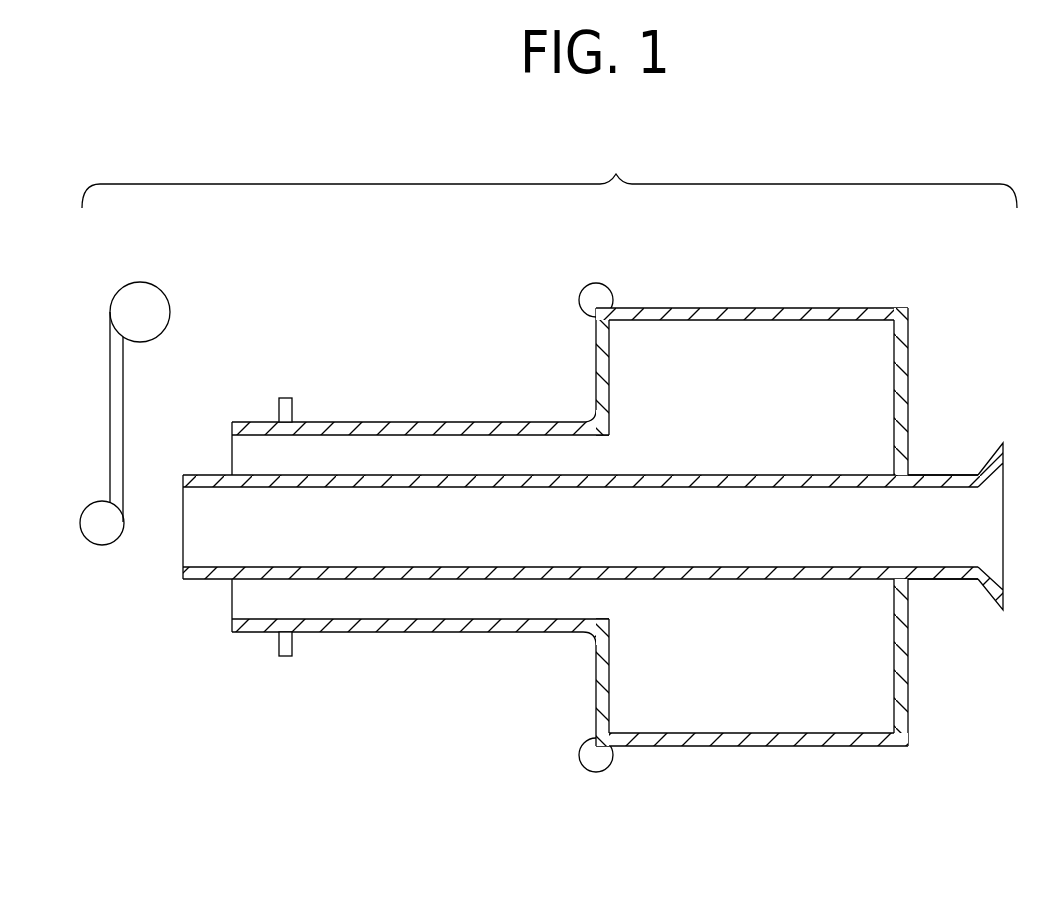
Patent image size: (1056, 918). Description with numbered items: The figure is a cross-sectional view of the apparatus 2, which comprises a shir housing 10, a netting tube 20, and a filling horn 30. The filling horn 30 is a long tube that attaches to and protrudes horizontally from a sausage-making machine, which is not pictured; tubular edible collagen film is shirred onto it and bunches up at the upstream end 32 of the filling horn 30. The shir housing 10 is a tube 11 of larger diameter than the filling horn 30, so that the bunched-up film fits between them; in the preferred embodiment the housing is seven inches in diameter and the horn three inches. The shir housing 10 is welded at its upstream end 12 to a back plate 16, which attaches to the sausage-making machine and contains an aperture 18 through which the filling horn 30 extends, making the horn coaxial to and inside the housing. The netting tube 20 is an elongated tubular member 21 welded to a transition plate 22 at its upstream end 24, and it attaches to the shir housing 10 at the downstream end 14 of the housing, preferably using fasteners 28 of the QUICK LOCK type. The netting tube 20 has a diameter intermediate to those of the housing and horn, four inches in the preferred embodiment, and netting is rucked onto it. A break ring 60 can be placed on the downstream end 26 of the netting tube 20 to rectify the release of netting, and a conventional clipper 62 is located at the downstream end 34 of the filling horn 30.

The apparatus 2 is at (463, 334).
The shir housing 10 is at (810, 308).
The tube 11 is at (745, 748).
The upstream end of shir housing 12 is at (902, 748).
The downstream end of shir housing 14 is at (612, 748).
The back plate 16 is at (908, 342).
The aperture 18 is at (910, 473).
The netting tube 20 is at (428, 633).
The elongated tubular member 21 is at (380, 422).
The transition plate 22 is at (596, 356).
The upstream end of netting tube 24 is at (592, 641).
The downstream end of netting tube 26 is at (262, 633).
The fasteners 28 is at (596, 283).
The filling horn 30 is at (928, 580).
The upstream end of filling horn 32 is at (962, 474).
The downstream end of filling horn 34 is at (195, 475).
The break ring 60 is at (284, 398).
The clipper 62 is at (172, 283).